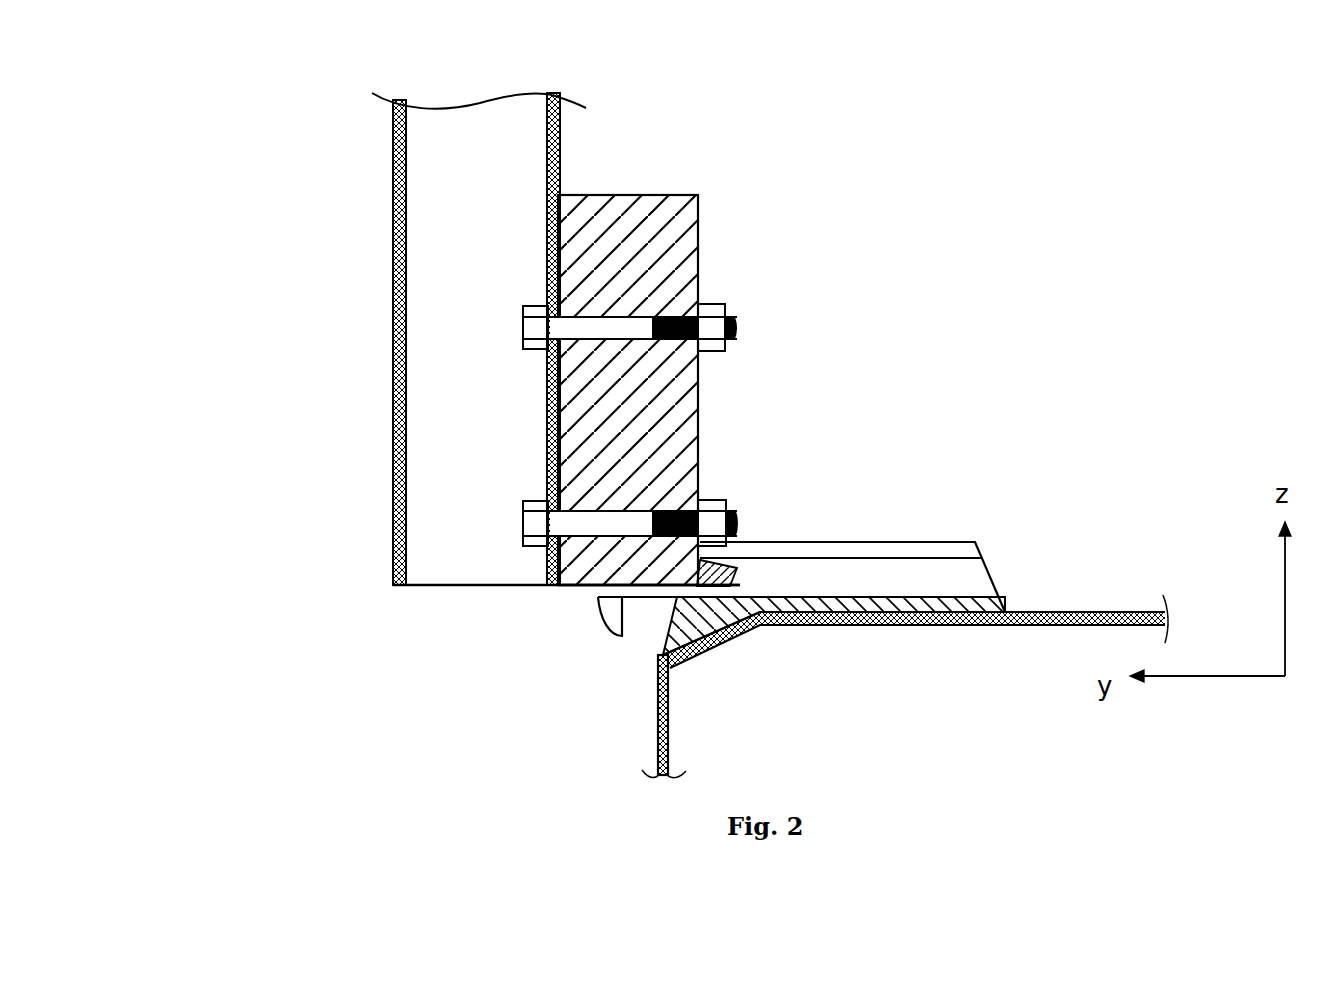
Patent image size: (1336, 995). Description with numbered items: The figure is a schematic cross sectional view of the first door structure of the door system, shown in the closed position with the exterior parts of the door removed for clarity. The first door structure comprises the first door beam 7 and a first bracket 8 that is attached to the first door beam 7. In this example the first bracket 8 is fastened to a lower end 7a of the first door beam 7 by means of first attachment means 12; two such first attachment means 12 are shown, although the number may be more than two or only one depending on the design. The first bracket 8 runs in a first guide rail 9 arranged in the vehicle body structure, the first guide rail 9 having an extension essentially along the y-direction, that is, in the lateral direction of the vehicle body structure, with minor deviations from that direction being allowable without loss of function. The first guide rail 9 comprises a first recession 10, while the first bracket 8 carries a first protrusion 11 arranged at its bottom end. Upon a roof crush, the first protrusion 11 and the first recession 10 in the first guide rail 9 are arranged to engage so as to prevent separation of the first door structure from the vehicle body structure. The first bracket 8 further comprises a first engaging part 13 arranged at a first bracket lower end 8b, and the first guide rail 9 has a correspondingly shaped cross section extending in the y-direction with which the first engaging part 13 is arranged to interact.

The first door beam 7 is at (228, 180).
The lower end of the first door beam 7a is at (393, 563).
The first bracket 8 is at (657, 193).
The first bracket lower end 8b is at (598, 587).
The first guide rail 9 is at (820, 577).
The first recession 10 is at (650, 645).
The first protrusion 11 is at (672, 597).
The first attachment means 12 is at (523, 525).
The first engaging part 13 is at (700, 590).